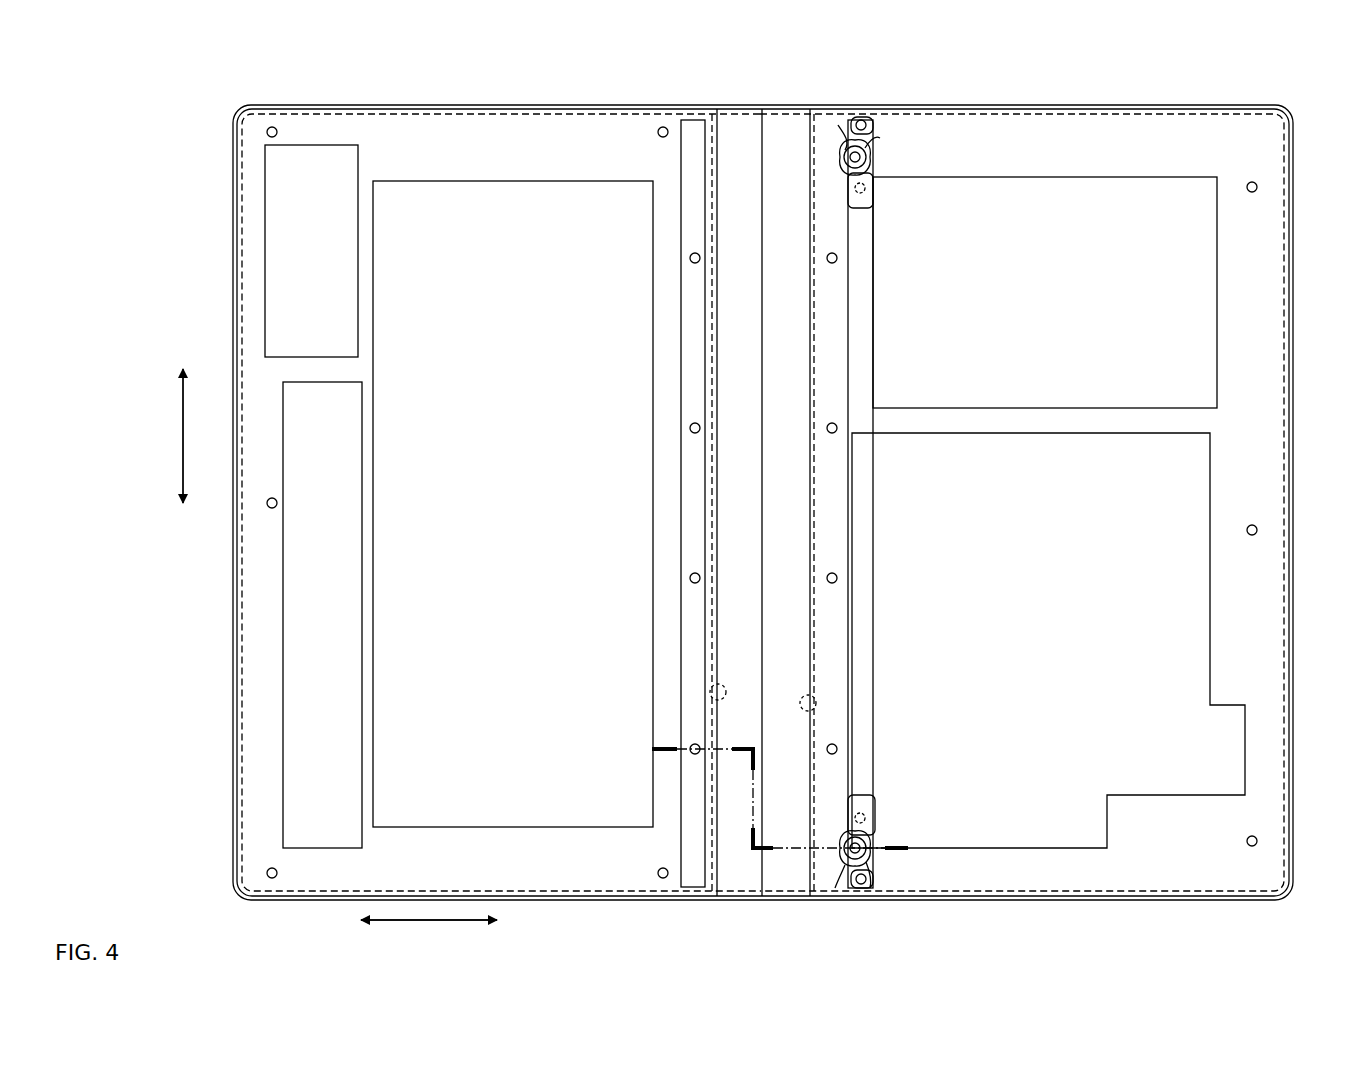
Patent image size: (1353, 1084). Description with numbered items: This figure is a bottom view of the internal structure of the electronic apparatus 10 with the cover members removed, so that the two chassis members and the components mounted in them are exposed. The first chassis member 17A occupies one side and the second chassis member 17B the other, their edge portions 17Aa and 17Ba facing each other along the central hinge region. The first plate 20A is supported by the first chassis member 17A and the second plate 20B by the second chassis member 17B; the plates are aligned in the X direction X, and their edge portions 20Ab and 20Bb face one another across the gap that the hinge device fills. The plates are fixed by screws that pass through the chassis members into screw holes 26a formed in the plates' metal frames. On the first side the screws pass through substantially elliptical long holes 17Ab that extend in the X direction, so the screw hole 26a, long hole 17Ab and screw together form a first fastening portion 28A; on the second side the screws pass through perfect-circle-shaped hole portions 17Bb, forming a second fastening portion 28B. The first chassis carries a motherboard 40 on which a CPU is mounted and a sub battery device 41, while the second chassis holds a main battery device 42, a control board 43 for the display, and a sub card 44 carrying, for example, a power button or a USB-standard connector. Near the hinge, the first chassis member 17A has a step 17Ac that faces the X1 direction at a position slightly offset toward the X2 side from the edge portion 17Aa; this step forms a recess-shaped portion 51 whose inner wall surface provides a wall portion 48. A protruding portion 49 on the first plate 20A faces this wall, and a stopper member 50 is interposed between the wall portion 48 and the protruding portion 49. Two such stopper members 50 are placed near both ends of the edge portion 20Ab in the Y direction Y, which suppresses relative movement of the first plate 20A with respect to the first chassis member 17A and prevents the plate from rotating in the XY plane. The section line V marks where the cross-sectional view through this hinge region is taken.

The electronic apparatus 10 is at (172, 75).
The first chassis member 17A is at (824, 492).
The second chassis member 17B is at (677, 473).
The edge portion 17Aa is at (810, 343).
The edge portion 17Ba is at (764, 337).
The long hole 17Ab is at (1038, 502).
The hole portion 17Bb is at (480, 492).
The step 17Ac is at (875, 185).
The first plate 20A is at (1015, 895).
The second plate 20B is at (560, 895).
The edge portion 20Ab is at (816, 703).
The edge portion 20Bb is at (710, 692).
The screw hole 26a is at (775, 502).
The first fastening portion 28A is at (889, 69).
The second fastening portion 28B is at (311, 76).
The motherboard 40 is at (1068, 840).
The sub battery device 41 is at (1130, 205).
The main battery device 42 is at (513, 205).
The control board 43 is at (305, 660).
The sub card 44 is at (270, 243).
The wall portion 48 is at (850, 148).
The protruding portion 49 is at (848, 160).
The stopper member 50 is at (866, 155).
The recess-shaped portion 51 is at (870, 118).
The line V- V is at (665, 753).
The X direction X is at (429, 932).
The Y direction Y is at (170, 436).